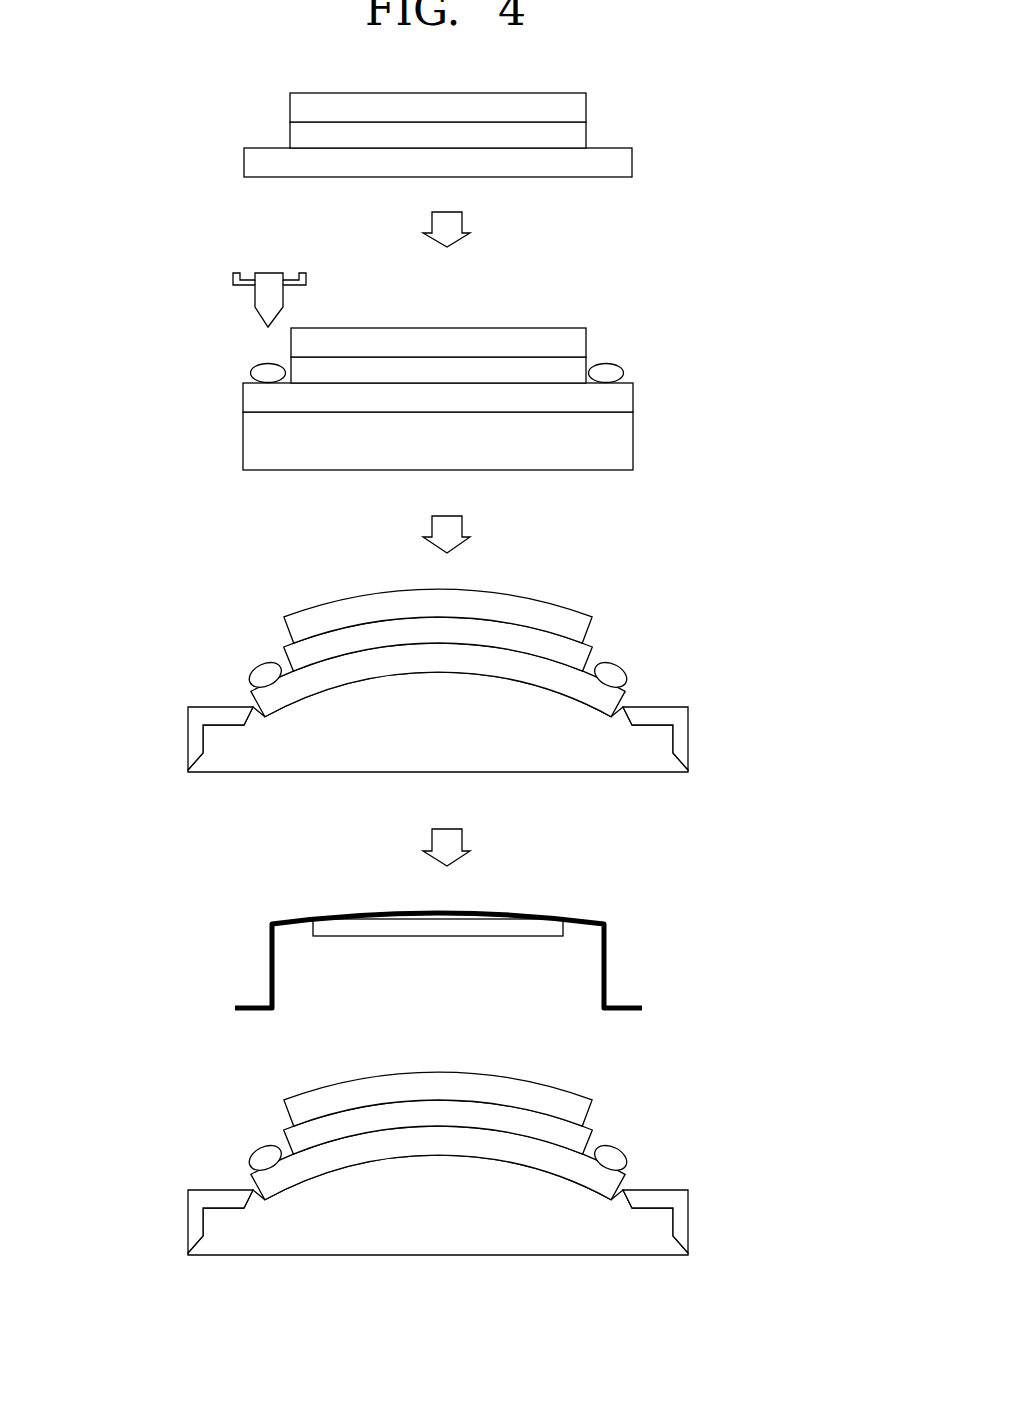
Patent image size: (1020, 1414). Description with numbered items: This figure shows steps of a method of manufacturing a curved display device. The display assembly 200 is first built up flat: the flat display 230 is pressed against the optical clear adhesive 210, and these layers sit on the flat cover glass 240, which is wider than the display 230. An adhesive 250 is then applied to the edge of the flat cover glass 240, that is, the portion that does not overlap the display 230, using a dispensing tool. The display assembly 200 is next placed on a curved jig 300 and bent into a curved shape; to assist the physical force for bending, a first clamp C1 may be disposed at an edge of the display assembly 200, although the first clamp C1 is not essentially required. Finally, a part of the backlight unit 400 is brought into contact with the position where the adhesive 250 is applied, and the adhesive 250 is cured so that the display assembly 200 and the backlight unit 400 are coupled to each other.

The display assembly 200 is at (633, 127).
The optical clear adhesive 210 is at (290, 131).
The flat display 230 is at (290, 104).
The flat cover glass 240 is at (250, 162).
The adhesive 250 is at (623, 372).
The curved jig / mold 300 is at (628, 438).
The backlight unit 400 is at (633, 945).
The first clamp C1 is at (683, 742).